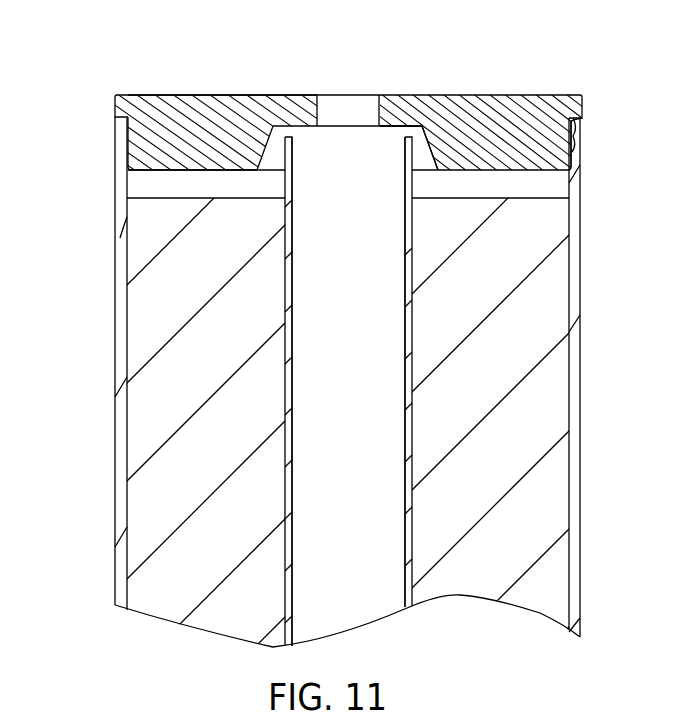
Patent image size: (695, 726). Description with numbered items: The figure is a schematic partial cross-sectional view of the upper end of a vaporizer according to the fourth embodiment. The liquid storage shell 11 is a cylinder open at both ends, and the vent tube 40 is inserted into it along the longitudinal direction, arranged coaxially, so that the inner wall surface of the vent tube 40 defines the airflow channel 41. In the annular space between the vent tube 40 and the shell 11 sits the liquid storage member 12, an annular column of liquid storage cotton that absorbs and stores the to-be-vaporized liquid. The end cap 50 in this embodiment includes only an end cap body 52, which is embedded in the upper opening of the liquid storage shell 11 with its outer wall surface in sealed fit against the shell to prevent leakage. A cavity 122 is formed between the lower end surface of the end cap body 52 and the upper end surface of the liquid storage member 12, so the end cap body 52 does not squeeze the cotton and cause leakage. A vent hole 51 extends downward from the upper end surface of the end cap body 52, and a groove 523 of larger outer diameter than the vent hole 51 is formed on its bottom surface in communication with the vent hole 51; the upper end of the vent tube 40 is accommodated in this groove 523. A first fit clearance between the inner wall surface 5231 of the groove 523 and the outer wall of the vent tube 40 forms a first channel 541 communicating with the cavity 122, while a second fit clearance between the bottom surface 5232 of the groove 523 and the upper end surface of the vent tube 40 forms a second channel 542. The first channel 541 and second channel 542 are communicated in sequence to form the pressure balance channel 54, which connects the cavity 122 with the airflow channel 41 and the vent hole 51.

The liquid storage shell 11 is at (122, 515).
The liquid storage member 12 is at (167, 403).
The cavity 122 is at (495, 188).
The vent tube 40 is at (412, 478).
The airflow channel 41 is at (380, 369).
The end cap 50 is at (127, 143).
The vent hole 51 is at (348, 107).
The end cap body 52 is at (542, 140).
The groove 523 is at (265, 165).
The inner wall surface of the groove 5231 is at (200, 98).
The bottom surface of the groove 5232 is at (268, 98).
The pressure balance channel 54 is at (572, 28).
The first channel 541 is at (427, 145).
The second channel 542 is at (412, 128).